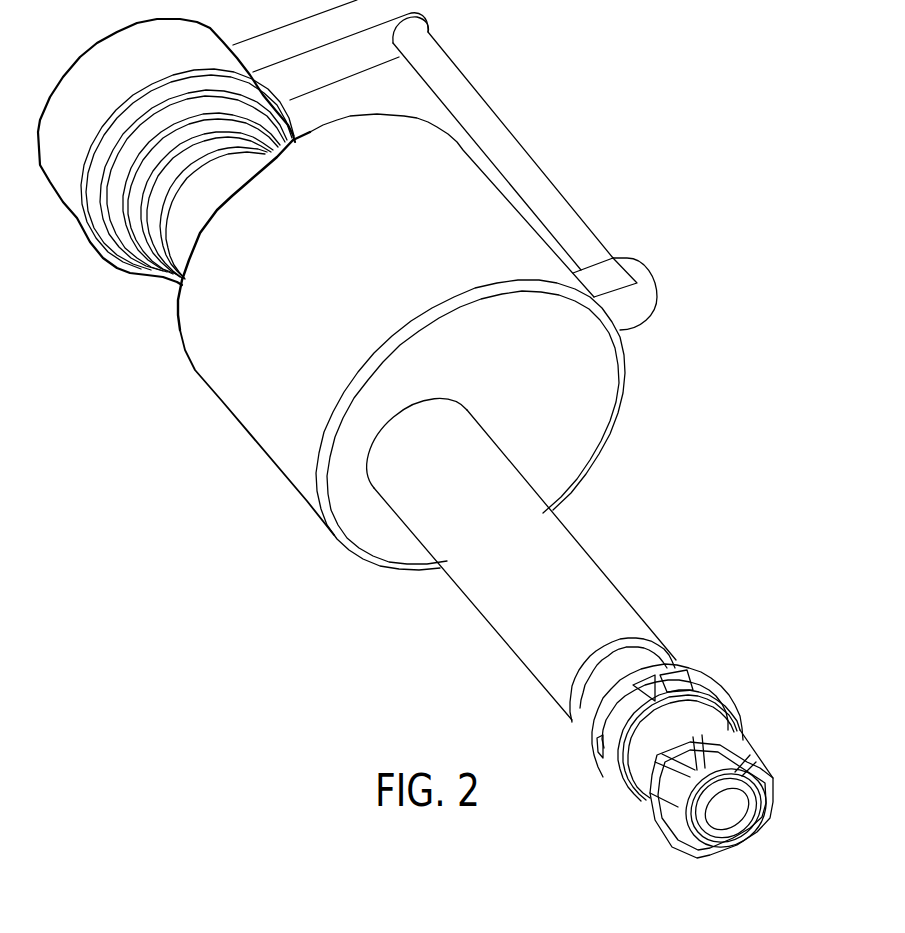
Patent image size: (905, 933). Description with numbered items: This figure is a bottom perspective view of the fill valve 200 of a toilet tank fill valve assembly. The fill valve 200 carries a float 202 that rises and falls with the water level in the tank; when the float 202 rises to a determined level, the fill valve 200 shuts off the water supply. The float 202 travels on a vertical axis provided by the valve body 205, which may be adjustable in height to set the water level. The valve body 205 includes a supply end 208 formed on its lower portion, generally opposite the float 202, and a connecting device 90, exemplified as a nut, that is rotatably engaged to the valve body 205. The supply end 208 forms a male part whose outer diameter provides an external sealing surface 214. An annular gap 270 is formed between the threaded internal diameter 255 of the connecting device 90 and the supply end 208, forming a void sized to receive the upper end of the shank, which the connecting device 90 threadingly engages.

The fill valve 200 is at (594, 50).
The float 202 is at (70, 90).
The valve body 205 is at (587, 570).
The connecting device 90 is at (747, 770).
The supply end 208 is at (763, 770).
The sealing surface 214 is at (717, 777).
The threaded internal diameter 255 is at (683, 847).
The annular gap 270 is at (698, 855).